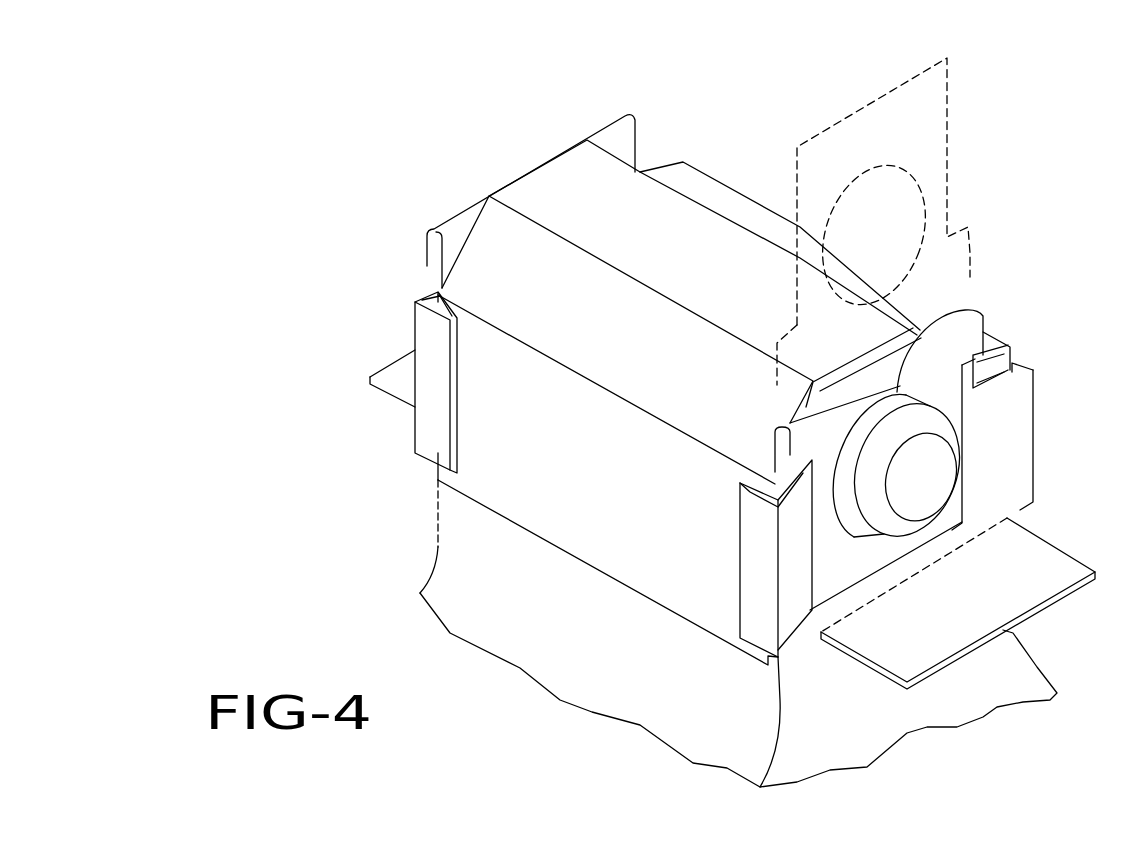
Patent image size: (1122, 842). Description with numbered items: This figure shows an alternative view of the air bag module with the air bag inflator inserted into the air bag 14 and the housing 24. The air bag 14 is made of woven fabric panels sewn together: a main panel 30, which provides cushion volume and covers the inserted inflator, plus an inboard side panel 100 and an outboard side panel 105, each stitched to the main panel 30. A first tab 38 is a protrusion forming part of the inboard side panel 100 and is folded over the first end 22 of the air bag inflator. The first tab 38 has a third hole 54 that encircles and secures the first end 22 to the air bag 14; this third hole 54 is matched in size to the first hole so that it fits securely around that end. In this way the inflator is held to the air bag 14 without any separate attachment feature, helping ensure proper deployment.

The air bag 14 is at (500, 612).
The first end 22 is at (935, 472).
The housing 24 is at (614, 478).
The main panel 30 is at (612, 657).
The first tab 38 is at (953, 502).
The third hole 54 is at (905, 345).
The side panel 100 is at (852, 724).
The side panel 105 is at (433, 545).